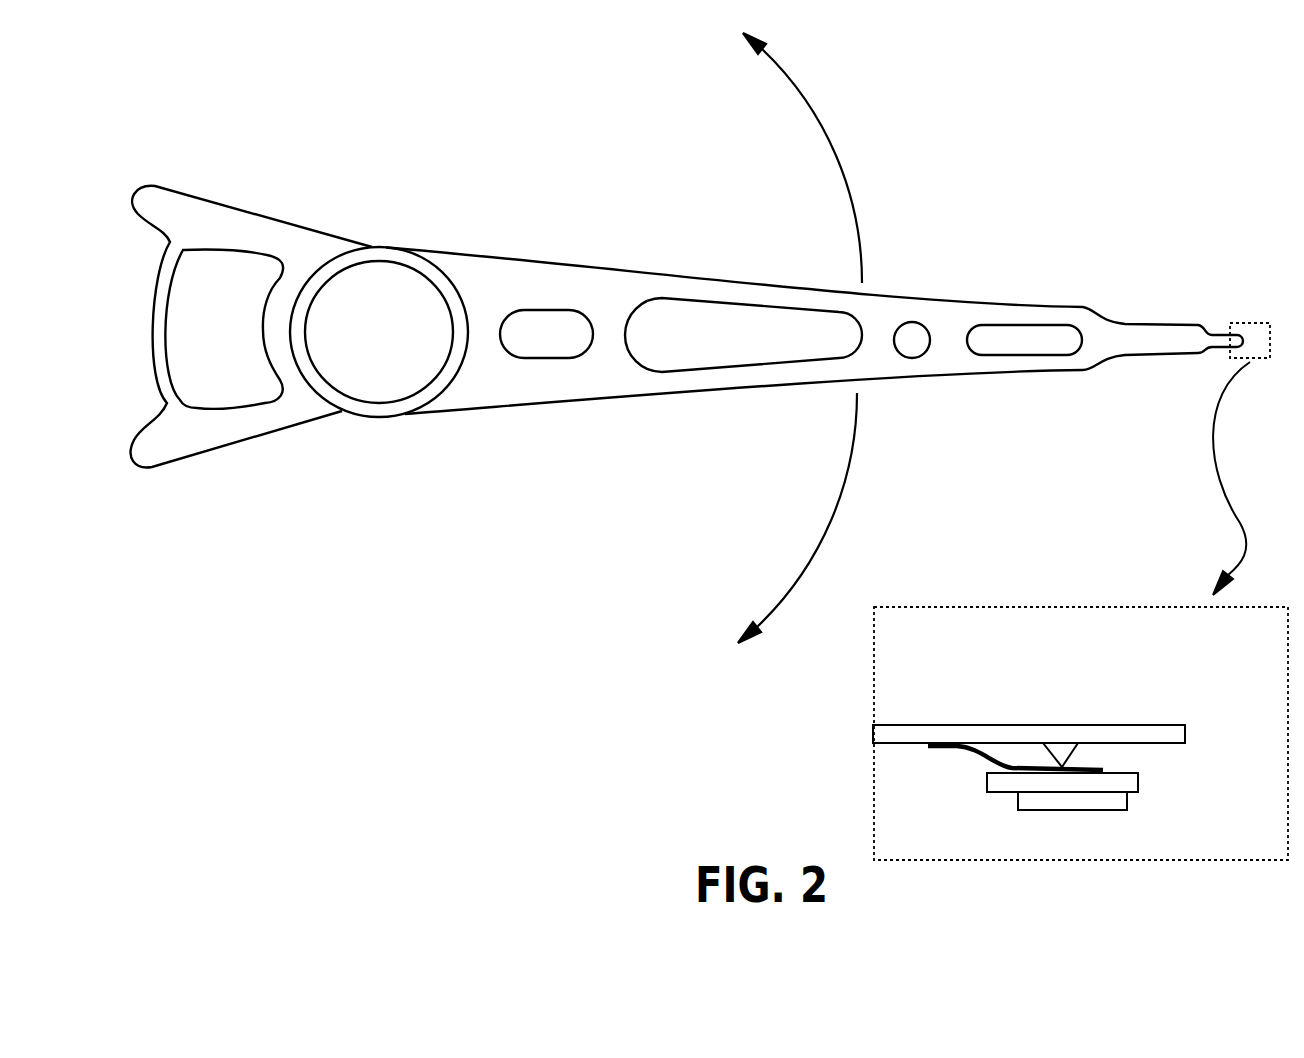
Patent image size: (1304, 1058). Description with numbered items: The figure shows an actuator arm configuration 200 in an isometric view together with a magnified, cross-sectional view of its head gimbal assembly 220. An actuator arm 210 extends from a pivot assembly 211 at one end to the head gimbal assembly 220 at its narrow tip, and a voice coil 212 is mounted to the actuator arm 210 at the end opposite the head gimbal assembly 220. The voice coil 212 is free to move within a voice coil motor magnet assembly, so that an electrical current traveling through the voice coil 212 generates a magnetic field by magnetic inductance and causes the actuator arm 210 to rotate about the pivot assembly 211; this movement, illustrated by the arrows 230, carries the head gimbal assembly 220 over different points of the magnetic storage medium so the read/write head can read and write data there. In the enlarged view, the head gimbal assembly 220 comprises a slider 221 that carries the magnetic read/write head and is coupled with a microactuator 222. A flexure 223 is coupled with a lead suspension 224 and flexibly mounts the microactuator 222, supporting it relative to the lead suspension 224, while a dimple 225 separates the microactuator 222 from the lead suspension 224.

The actuator arm configuration 200 is at (337, 629).
The actuator arm 210 is at (585, 263).
The pivot assembly 211 is at (392, 258).
The voice coil 212 is at (240, 230).
The head gimbal assembly 220 is at (1245, 657).
The slider 221 is at (1118, 813).
The microactuator 222 is at (1142, 783).
The flexure 223 is at (963, 761).
The lead suspension 224 is at (1038, 725).
The dimple 225 is at (1062, 752).
The arrows 230 is at (837, 160).